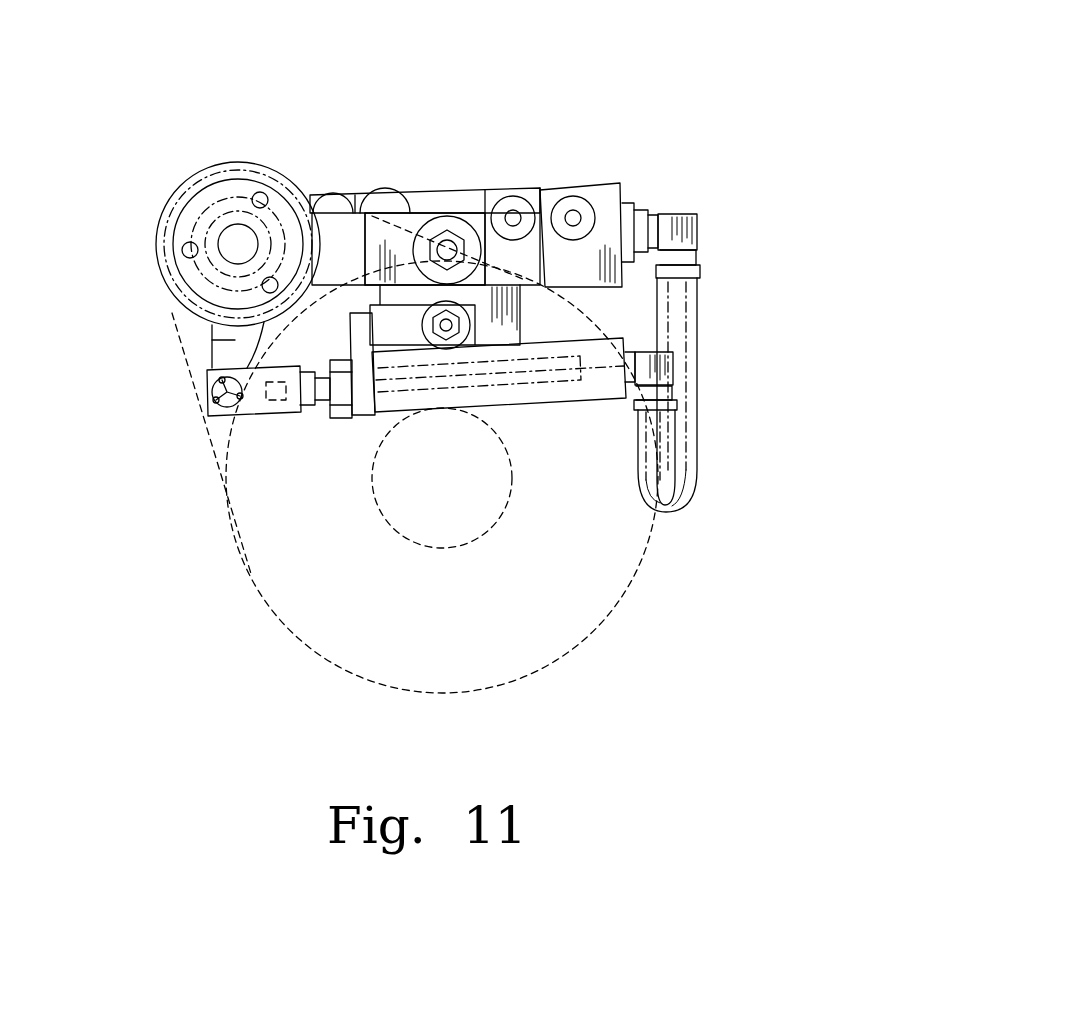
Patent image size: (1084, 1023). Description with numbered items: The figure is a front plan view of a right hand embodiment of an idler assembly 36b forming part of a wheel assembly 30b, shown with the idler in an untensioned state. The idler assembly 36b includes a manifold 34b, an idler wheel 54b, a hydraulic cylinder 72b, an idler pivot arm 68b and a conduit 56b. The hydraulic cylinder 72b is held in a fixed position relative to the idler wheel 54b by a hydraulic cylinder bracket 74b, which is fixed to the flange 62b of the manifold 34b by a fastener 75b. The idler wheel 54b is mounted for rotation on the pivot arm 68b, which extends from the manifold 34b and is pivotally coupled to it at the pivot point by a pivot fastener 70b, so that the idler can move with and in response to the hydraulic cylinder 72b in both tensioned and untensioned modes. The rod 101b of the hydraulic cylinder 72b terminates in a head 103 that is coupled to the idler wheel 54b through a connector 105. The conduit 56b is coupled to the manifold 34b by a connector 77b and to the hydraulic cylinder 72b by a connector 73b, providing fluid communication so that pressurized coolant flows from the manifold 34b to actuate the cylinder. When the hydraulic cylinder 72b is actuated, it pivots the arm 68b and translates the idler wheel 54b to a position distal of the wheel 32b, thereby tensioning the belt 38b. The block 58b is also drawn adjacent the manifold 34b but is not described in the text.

The wheel assembly 30b is at (683, 80).
The wheel 32b is at (625, 574).
The manifold 34b is at (348, 192).
The idler assembly 36b is at (180, 413).
The belt 38b is at (165, 327).
The idler wheel 54b is at (192, 192).
The conduit 56b is at (690, 322).
The valve block 58b is at (532, 184).
The flange 62b is at (512, 328).
The idler pivot arm 68b is at (410, 230).
The pivot fastener 70b is at (447, 245).
The hydraulic cylinder 72b is at (550, 396).
The connector 73b is at (672, 363).
The hydraulic cylinder bracket 74b is at (345, 421).
The fastener 75b is at (355, 325).
The connector 77b is at (697, 222).
The rod 101b is at (312, 404).
The head 103 is at (226, 402).
The connector 105 is at (205, 348).